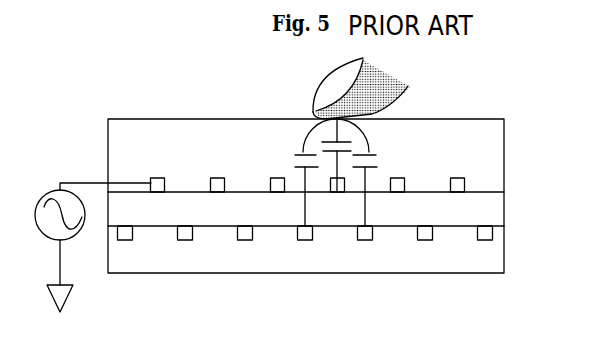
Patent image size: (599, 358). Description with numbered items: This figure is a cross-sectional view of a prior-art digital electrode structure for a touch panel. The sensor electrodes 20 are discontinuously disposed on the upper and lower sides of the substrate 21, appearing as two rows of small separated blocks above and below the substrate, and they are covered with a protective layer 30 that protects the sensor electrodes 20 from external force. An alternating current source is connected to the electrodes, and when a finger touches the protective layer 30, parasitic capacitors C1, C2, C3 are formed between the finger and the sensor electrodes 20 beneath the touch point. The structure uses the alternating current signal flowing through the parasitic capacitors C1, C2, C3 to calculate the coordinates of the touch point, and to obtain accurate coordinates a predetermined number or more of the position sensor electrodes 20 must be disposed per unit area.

The sensor electrodes 20 is at (465, 181).
The substrate 21 is at (186, 213).
The protective layer 30 is at (147, 158).
The parasitic capacitor C1 is at (295, 155).
The parasitic capacitor C2 is at (329, 155).
The parasitic capacitor C3 is at (376, 155).